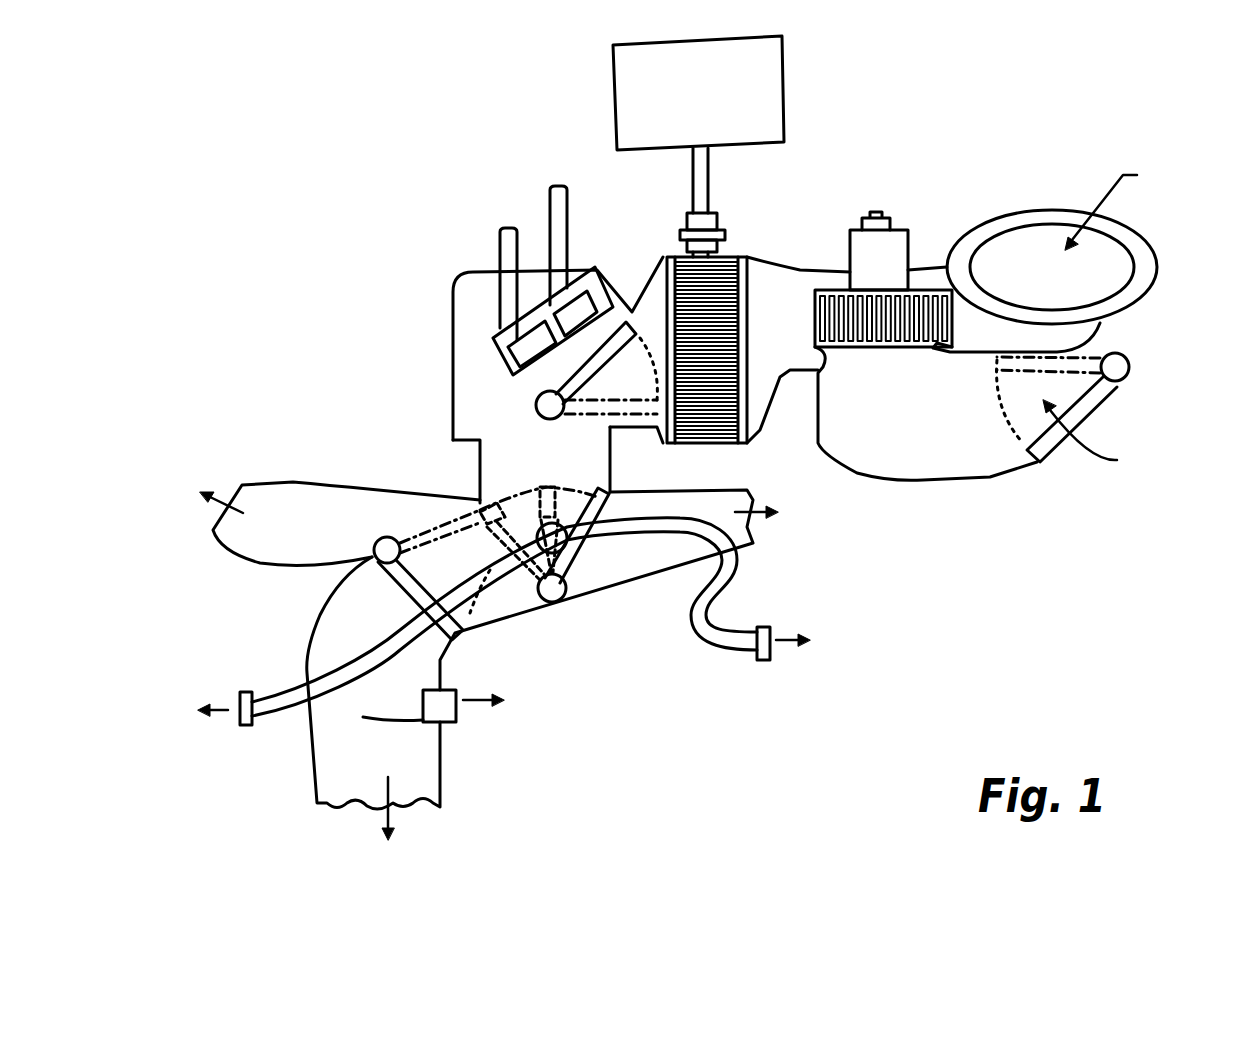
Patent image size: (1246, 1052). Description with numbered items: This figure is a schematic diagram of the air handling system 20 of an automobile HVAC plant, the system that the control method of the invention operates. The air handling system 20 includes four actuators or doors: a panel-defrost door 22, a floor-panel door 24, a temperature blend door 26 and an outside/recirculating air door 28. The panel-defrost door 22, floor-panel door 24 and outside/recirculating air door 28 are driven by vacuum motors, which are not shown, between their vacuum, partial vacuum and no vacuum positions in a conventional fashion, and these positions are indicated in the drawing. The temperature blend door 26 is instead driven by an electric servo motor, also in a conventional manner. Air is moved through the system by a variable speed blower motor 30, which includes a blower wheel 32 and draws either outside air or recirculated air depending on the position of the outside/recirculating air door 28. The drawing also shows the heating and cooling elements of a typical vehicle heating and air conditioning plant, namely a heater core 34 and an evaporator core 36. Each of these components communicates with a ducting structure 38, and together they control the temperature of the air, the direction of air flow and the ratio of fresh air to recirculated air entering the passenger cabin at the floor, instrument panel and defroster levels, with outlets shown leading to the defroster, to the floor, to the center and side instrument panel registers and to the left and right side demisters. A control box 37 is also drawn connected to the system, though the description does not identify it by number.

The air handling system 20 is at (1003, 172).
The panel-defrost door 22 is at (327, 617).
The floor-panel door 24 is at (573, 552).
The temperature blend door 26 is at (560, 378).
The outside/recirculating air door 28 is at (1090, 410).
The blower motor 30 is at (847, 260).
The blower wheel 32 is at (930, 290).
The heater core 34 is at (503, 360).
The evaporator core 36 is at (773, 262).
The controller 37 is at (612, 95).
The ducting structure 38 is at (375, 490).